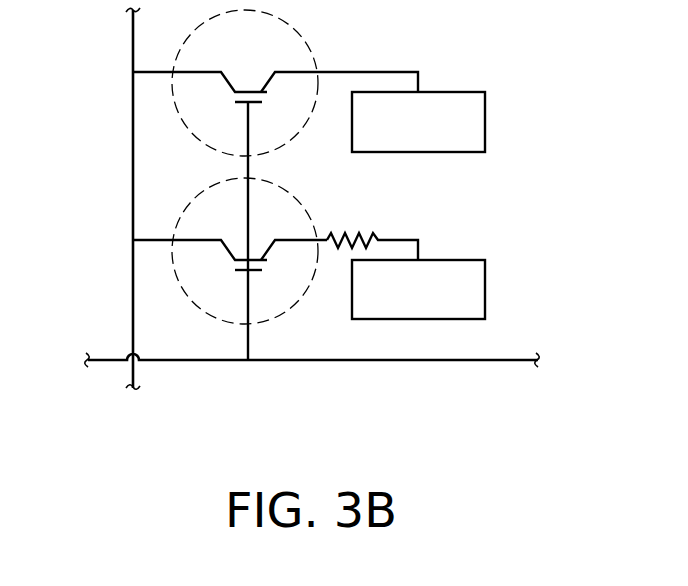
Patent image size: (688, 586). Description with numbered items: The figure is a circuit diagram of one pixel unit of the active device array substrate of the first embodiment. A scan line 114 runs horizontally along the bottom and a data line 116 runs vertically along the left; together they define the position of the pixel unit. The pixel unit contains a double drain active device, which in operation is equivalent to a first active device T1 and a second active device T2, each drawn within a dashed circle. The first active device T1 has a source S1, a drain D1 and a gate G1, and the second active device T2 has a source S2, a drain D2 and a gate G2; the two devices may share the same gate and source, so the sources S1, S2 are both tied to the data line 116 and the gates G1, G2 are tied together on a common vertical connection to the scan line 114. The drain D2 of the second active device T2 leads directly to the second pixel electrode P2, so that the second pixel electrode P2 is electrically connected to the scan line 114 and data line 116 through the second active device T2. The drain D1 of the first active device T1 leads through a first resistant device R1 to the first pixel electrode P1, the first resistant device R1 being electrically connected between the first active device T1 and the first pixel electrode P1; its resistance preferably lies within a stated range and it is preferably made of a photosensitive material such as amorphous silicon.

The first active device T1 is at (192, 251).
The second active device T2 is at (238, 185).
The source of first active device S1 is at (200, 232).
The drain of first active device D1 is at (294, 232).
The gate of first active device G1 is at (238, 292).
The source of second active device S2 is at (200, 64).
The drain of second active device D2 is at (339, 64).
The gate of second active device G2 is at (238, 231).
The first resistant device R1 is at (378, 235).
The first pixel electrode P1 is at (485, 289).
The second pixel electrode P2 is at (485, 121).
The scan line 114 is at (117, 357).
The data line 116 is at (130, 371).